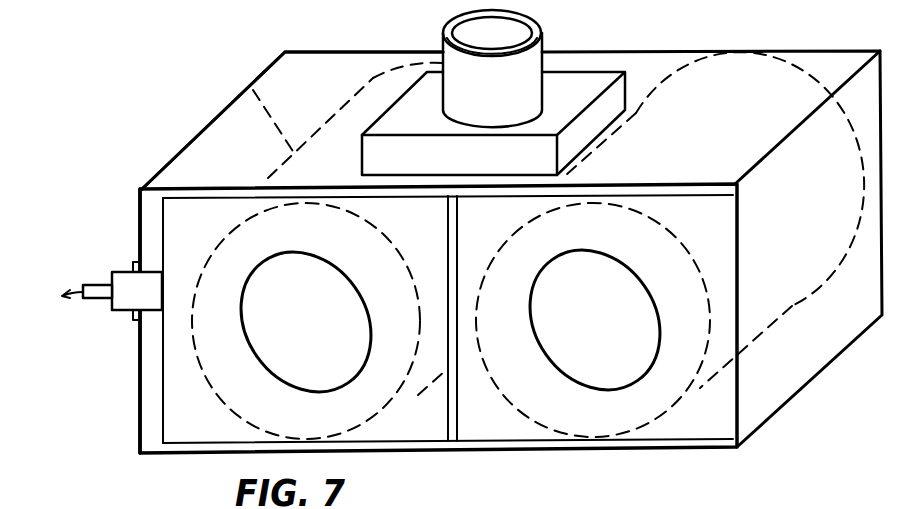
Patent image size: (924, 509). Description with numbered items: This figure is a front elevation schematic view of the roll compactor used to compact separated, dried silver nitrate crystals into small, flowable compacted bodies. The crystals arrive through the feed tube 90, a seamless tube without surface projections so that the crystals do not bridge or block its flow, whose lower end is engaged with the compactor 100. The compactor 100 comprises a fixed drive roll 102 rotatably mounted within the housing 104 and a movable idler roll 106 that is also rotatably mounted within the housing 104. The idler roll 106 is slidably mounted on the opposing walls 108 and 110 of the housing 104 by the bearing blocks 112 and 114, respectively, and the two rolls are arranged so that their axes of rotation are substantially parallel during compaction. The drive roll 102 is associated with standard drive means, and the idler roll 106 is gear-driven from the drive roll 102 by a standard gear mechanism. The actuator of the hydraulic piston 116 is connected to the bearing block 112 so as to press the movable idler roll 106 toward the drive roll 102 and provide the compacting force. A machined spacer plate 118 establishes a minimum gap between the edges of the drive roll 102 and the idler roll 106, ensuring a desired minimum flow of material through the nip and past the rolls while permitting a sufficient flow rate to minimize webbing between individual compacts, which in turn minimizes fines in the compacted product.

The feed tube 90 is at (527, 68).
The compactor 100 is at (757, 43).
The drive roll 102 is at (800, 310).
The housing 104 is at (737, 420).
The idler roll 106 is at (259, 93).
The wall 108 is at (140, 232).
The wall 110 is at (313, 40).
The bearing block 112 is at (180, 207).
The bearing block 114 is at (350, 72).
The hydraulic piston 116 is at (122, 310).
The machined spacer plate 118 is at (457, 420).